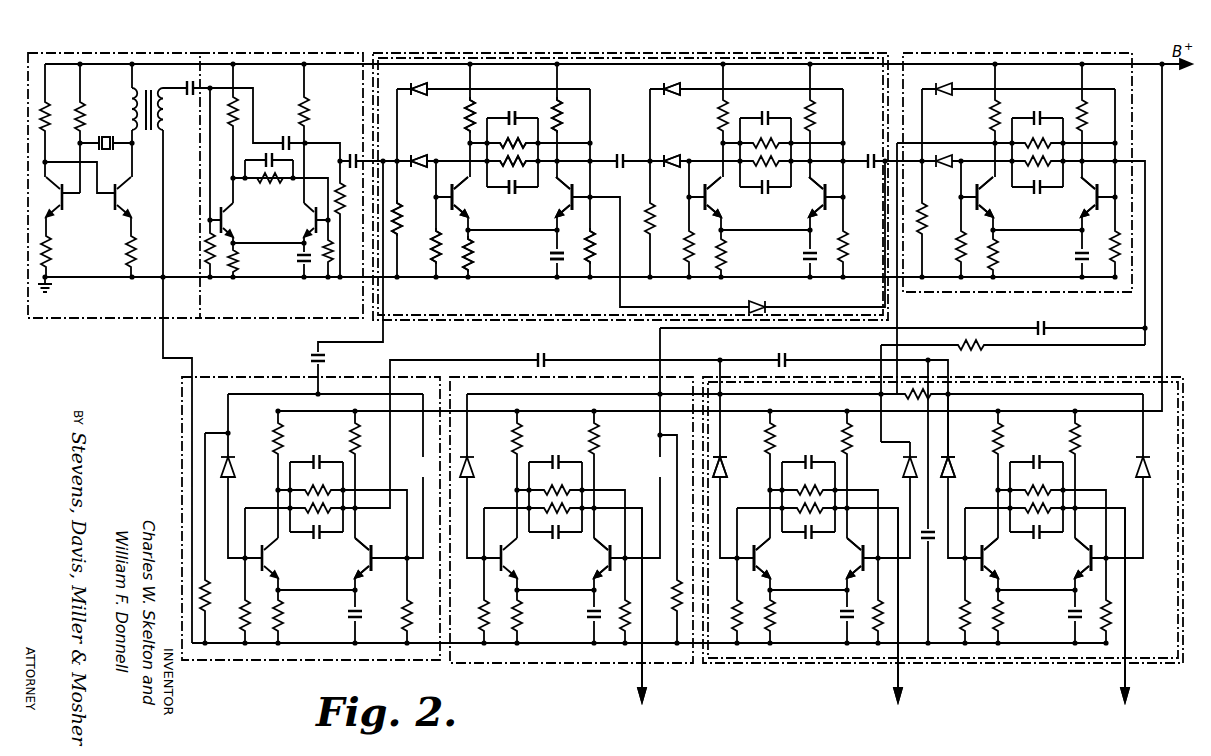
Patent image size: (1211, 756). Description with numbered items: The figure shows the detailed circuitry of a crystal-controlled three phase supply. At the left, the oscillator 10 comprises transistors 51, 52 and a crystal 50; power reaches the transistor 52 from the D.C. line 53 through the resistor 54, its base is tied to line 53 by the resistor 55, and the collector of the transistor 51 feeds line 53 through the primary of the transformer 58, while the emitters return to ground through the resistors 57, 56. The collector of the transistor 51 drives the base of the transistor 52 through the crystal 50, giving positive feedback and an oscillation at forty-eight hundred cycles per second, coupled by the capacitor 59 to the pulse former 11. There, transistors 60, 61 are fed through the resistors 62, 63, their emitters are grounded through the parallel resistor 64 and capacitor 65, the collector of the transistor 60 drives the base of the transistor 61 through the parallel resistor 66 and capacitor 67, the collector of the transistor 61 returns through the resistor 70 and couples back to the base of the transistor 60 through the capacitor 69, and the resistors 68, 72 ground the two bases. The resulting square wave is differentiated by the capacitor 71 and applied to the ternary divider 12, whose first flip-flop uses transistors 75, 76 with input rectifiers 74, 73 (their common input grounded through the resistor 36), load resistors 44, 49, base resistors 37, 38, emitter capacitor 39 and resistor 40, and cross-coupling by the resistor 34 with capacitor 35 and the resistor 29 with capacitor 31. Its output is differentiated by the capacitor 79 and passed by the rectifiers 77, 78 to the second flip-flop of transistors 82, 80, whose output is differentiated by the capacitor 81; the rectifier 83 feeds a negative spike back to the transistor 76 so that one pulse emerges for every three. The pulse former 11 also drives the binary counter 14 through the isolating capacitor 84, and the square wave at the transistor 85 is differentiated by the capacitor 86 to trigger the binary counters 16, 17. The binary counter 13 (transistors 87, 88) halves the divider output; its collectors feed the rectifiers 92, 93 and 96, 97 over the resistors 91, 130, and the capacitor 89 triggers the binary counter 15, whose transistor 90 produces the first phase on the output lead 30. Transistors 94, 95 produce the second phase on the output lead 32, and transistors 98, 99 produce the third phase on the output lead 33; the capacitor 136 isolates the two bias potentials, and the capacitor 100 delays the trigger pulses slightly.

The oscillator 10 is at (132, 53).
The pulse former 11 is at (264, 53).
The line 53 is at (373, 54).
The ternary divider 12 is at (688, 53).
The binary counter 13 is at (1021, 53).
The binary counter 14 is at (268, 662).
The binary counter 15 is at (569, 663).
The binary counter 16 is at (781, 664).
The binary counter 17 is at (1047, 664).
The resistor 54 is at (46, 106).
The resistor 55 is at (82, 103).
The crystal 50 is at (104, 135).
The transformer 58 is at (148, 125).
The capacitor 59 is at (188, 95).
The transistor 52 is at (60, 197).
The transistor 51 is at (118, 198).
The resistor 56 is at (47, 251).
The resistor 57 is at (130, 253).
The resistor 62 is at (233, 128).
The resistor 63 is at (320, 111).
The capacitor 69 is at (286, 137).
The capacitor 67 is at (266, 158).
The resistor 66 is at (262, 184).
The resistor 70 is at (340, 184).
The capacitor 71 is at (352, 158).
The transistor 60 is at (223, 222).
The transistor 61 is at (314, 225).
The resistor 72 is at (208, 241).
The resistor 64 is at (236, 260).
The capacitor 65 is at (298, 261).
The resistor 68 is at (329, 272).
The rectifier 73 is at (420, 86).
The resistor 44 is at (467, 108).
The resistor 29 is at (510, 118).
The capacitor 31 is at (524, 119).
The resistor 49 is at (558, 112).
The rectifier 74 is at (422, 155).
The resistor 36 is at (399, 217).
The transistor 75 is at (455, 198).
The resistor 34 is at (507, 192).
The capacitor 35 is at (514, 192).
The transistor 76 is at (565, 198).
The resistor 37 is at (438, 247).
The resistor 40 is at (471, 248).
The capacitor 39 is at (552, 257).
The resistor 38 is at (589, 243).
The capacitor 79 is at (619, 152).
The rectifier 77 is at (673, 100).
The rectifier 78 is at (672, 178).
The transistor 82 is at (710, 198).
The transistor 80 is at (820, 202).
The capacitor 81 is at (872, 151).
The rectifier 83 is at (750, 309).
The transistor 88 is at (982, 199).
The transistor 87 is at (1090, 202).
The capacitor 89 is at (1048, 327).
The resistor 91 is at (986, 348).
The capacitor 136 is at (781, 357).
The resistor 130 is at (940, 397).
The isolating capacitor 84 is at (311, 359).
The capacitor 86 is at (550, 358).
The transistor 85 is at (371, 560).
The transistor 90 is at (609, 560).
The rectifier 92 is at (726, 470).
The rectifier 93 is at (904, 470).
The transistor 94 is at (756, 559).
The transistor 95 is at (861, 560).
The rectifier 96 is at (954, 470).
The rectifier 97 is at (1149, 470).
The transistor 98 is at (985, 560).
The transistor 99 is at (1089, 560).
The capacitor 100 is at (929, 545).
The output lead 30 is at (644, 678).
The output lead 32 is at (899, 679).
The output lead 33 is at (1128, 677).